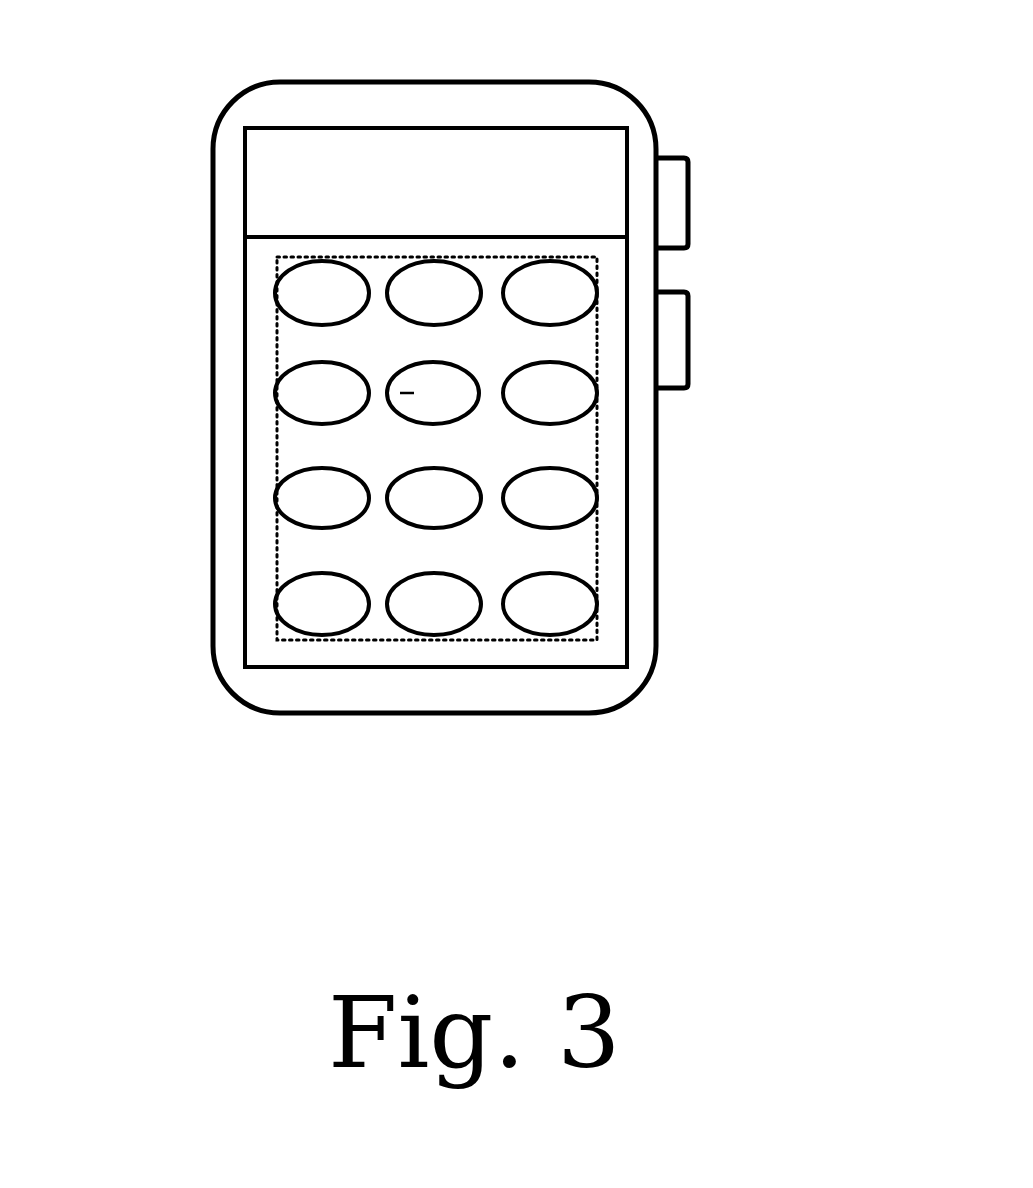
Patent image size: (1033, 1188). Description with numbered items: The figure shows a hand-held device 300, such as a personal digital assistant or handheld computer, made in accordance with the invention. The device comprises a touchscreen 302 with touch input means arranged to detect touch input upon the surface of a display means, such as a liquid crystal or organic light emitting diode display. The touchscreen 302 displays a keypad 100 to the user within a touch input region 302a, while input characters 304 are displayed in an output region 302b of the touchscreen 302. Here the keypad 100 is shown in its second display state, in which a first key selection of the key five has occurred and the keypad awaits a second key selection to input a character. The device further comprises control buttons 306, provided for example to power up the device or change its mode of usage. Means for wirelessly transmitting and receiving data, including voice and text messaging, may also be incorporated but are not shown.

The keypad 100 is at (275, 258).
The hand-held device 300 is at (532, 770).
The touchscreen 302 is at (627, 435).
The touch input region 302a is at (607, 512).
The output region 302b is at (593, 157).
The input characters 304 is at (277, 177).
The control buttons 306 is at (702, 158).